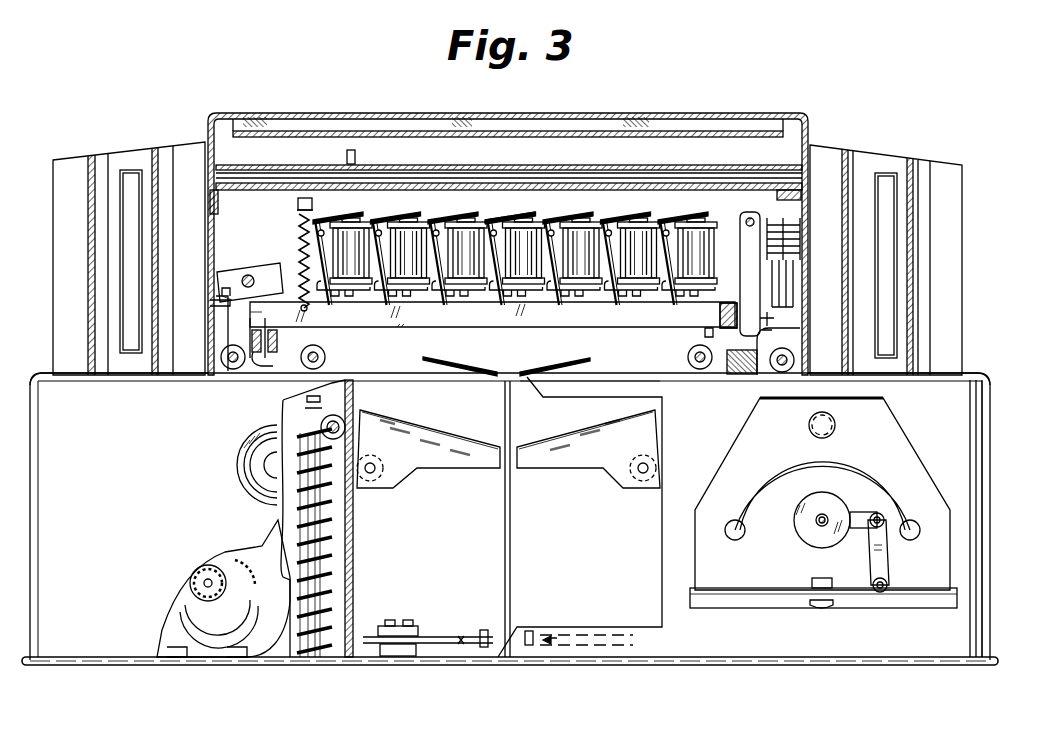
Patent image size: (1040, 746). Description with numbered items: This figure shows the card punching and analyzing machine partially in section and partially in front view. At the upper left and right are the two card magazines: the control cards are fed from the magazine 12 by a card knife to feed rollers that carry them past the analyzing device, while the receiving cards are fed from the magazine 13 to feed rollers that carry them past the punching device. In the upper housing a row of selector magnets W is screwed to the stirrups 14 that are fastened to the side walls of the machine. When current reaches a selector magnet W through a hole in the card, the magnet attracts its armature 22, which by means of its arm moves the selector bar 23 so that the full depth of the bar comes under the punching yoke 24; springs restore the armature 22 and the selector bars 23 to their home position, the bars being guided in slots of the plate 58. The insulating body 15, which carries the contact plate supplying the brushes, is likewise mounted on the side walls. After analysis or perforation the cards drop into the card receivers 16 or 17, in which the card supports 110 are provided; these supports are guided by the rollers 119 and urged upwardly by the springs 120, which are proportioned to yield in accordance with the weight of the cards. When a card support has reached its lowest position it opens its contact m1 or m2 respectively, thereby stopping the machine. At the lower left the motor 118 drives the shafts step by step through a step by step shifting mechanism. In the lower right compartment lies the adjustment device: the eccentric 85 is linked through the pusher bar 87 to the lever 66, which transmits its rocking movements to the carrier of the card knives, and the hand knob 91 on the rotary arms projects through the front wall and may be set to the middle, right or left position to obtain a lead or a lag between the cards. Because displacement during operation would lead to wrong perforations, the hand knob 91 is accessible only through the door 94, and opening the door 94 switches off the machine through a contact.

The magazine 12 is at (942, 173).
The magazine 13 is at (68, 170).
The stirrups 14 is at (517, 287).
The insulating body 15 is at (960, 433).
The card receiver 16 is at (610, 617).
The card receiver 17 is at (362, 620).
The armatures 22 is at (500, 219).
The selector bars 23 is at (357, 315).
The punching yoke 24 is at (262, 281).
The plate 58 is at (708, 334).
The lever 66 is at (880, 566).
The eccentric 85 is at (815, 537).
The pusher bar 87 is at (857, 512).
The hand knob 91 is at (833, 428).
The door 94 is at (857, 608).
The card supports 110 is at (557, 460).
The motor 118 is at (205, 633).
The rollers 119 is at (407, 470).
The springs 120 is at (313, 640).
The selector magnets W is at (637, 263).
The contact m1 is at (550, 647).
The contact m2 is at (463, 647).